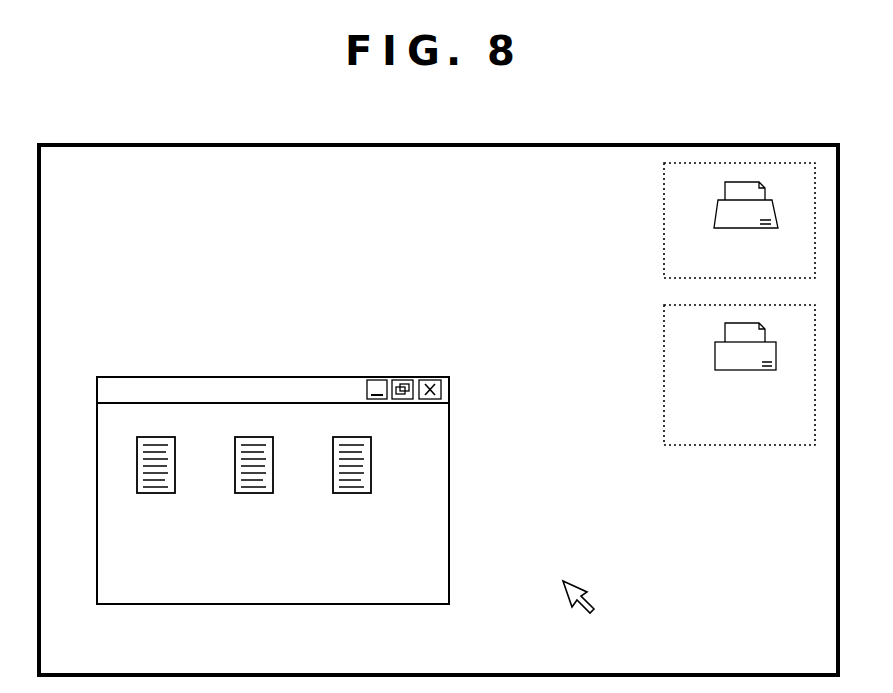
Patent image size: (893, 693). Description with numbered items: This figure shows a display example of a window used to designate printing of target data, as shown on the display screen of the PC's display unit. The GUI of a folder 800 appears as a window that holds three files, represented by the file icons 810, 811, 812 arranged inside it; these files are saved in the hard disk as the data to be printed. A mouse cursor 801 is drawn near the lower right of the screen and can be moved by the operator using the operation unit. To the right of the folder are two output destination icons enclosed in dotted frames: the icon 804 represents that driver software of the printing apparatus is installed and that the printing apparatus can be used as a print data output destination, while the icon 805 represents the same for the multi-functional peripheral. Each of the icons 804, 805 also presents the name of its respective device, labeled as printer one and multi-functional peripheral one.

The GUI of a folder 800 is at (265, 377).
The mouse cursor 801 is at (588, 602).
The icon representing printing apparatus driver 804 is at (664, 228).
The icon representing multi-functional peripheral driver 805 is at (664, 352).
The file icon 810 is at (157, 493).
The file icon 811 is at (255, 493).
The file icon 812 is at (353, 493).